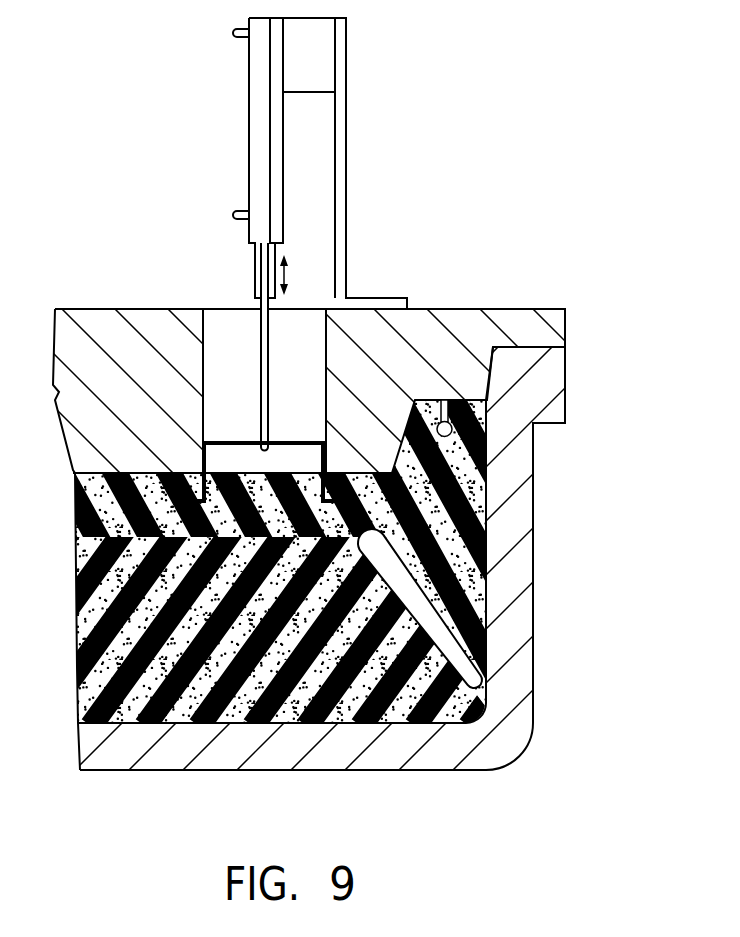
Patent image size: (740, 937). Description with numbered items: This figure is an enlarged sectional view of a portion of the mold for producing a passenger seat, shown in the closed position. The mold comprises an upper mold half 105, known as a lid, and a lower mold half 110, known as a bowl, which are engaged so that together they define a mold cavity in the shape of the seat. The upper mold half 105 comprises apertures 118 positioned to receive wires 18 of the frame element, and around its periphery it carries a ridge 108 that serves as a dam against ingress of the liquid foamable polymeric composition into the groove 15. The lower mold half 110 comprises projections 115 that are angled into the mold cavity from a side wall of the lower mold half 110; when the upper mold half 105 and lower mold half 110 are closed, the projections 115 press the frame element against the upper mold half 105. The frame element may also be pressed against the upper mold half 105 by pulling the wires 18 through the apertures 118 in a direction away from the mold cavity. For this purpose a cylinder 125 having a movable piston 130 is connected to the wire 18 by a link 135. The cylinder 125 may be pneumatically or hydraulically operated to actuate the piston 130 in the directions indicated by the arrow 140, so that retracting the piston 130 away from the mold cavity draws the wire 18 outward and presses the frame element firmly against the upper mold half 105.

The groove 15 is at (487, 427).
The wires 18 is at (220, 440).
The upper mold half 105 is at (462, 325).
The ridge 108 is at (483, 412).
The lower mold half 110 is at (513, 628).
The projections 115 is at (483, 578).
The apertures 118 is at (248, 366).
The cylinder 125 is at (258, 137).
The piston 130 is at (262, 262).
The link 135 is at (268, 338).
The arrow 140 is at (286, 276).